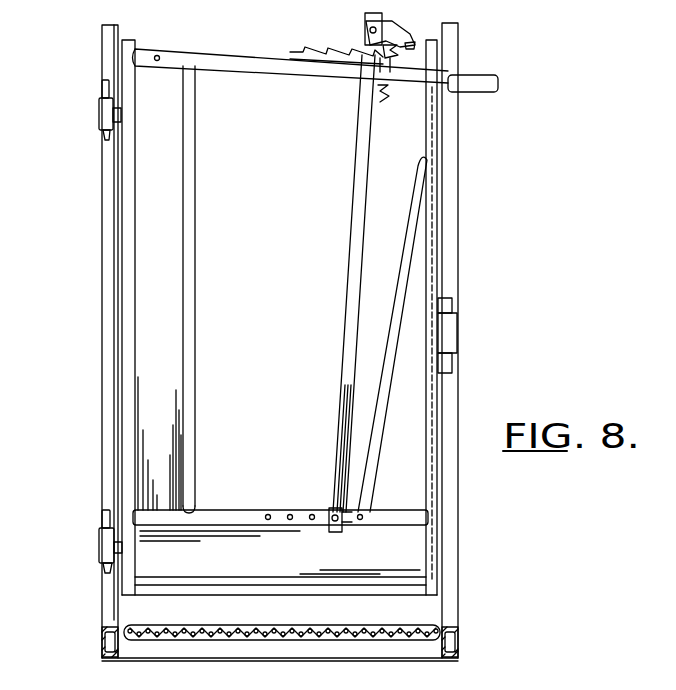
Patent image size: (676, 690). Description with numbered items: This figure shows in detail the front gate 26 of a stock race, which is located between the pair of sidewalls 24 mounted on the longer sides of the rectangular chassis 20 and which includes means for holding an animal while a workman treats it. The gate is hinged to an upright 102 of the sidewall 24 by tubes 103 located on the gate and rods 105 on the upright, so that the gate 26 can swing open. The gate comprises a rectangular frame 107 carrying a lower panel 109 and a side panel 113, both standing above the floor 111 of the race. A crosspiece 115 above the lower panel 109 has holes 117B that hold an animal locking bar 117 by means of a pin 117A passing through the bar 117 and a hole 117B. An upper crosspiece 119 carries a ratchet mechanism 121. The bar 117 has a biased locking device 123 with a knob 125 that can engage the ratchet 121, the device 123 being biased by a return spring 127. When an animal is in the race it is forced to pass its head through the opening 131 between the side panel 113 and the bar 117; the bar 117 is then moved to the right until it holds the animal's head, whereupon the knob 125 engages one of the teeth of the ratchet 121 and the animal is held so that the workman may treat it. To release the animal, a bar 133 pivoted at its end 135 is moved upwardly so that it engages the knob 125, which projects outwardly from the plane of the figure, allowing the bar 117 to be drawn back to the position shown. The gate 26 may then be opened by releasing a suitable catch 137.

The chassis 20 is at (102, 640).
The sidewall 24 is at (105, 282).
The front gate 26 is at (447, 222).
The upright 102 is at (106, 207).
The tube 103 is at (100, 116).
The rod 105 is at (101, 89).
The rectangular frame 107 is at (133, 210).
The lower panel 109 is at (261, 572).
The floor 111 is at (350, 606).
The side panel 113 is at (173, 342).
The crosspiece 115 is at (213, 512).
The animal locking bar 117 is at (350, 338).
The pin 117A is at (346, 532).
The holes 117B is at (311, 514).
The upper crosspiece 119 is at (266, 52).
The ratchet mechanism 121 is at (324, 48).
The biased locking device 123 is at (398, 34).
The knob 125 is at (416, 42).
The return spring 127 is at (400, 57).
The opening 131 is at (281, 291).
The bar 133 is at (483, 88).
The end 135 is at (160, 64).
The catch 137 is at (450, 331).